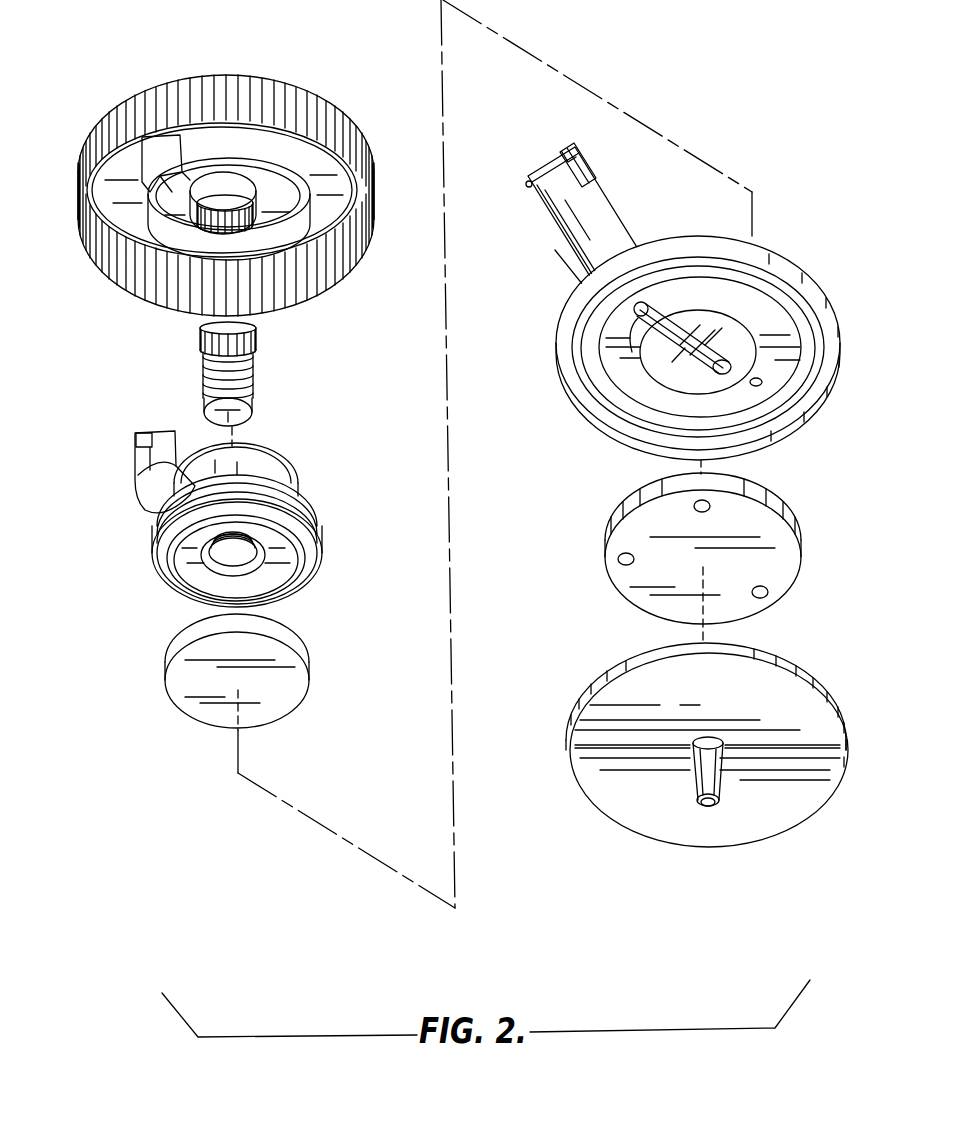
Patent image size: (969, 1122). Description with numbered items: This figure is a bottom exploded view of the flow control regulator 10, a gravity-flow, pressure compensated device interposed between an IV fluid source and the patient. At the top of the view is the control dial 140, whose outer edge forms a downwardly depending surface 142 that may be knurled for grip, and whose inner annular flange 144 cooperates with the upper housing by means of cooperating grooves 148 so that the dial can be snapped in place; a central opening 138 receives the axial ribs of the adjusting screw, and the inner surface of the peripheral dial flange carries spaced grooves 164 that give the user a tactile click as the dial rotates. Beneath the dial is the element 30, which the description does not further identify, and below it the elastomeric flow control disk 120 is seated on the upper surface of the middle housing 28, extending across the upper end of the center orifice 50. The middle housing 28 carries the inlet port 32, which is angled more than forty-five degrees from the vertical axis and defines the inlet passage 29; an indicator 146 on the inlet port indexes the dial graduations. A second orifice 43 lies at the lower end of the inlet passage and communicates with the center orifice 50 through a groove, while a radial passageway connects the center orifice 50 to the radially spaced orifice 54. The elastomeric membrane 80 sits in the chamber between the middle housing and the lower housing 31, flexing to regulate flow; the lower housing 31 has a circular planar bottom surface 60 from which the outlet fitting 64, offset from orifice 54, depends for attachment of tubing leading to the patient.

The flow control regulator 10 is at (108, 533).
The middle housing 28 is at (800, 262).
The inlet passage 29 is at (546, 153).
The ratchet body 30 is at (300, 493).
The lower housing 31 is at (714, 701).
The inlet port 32 is at (553, 225).
The second orifice 43 is at (638, 318).
The center orifice 50 is at (685, 363).
The orifice 54 is at (758, 388).
The bottom surface 60 is at (608, 805).
The outlet fitting 64 is at (722, 787).
The elastomeric membrane 80 is at (640, 593).
The elastomeric flow control disk 120 is at (180, 690).
The opening 138 is at (225, 215).
The control dial 140 is at (204, 392).
The downwardly depending surface 142 is at (165, 80).
The inner annular flange 144 is at (272, 195).
The indicator 146 is at (592, 165).
The grooves 148 is at (205, 212).
The grooves 164 is at (293, 290).